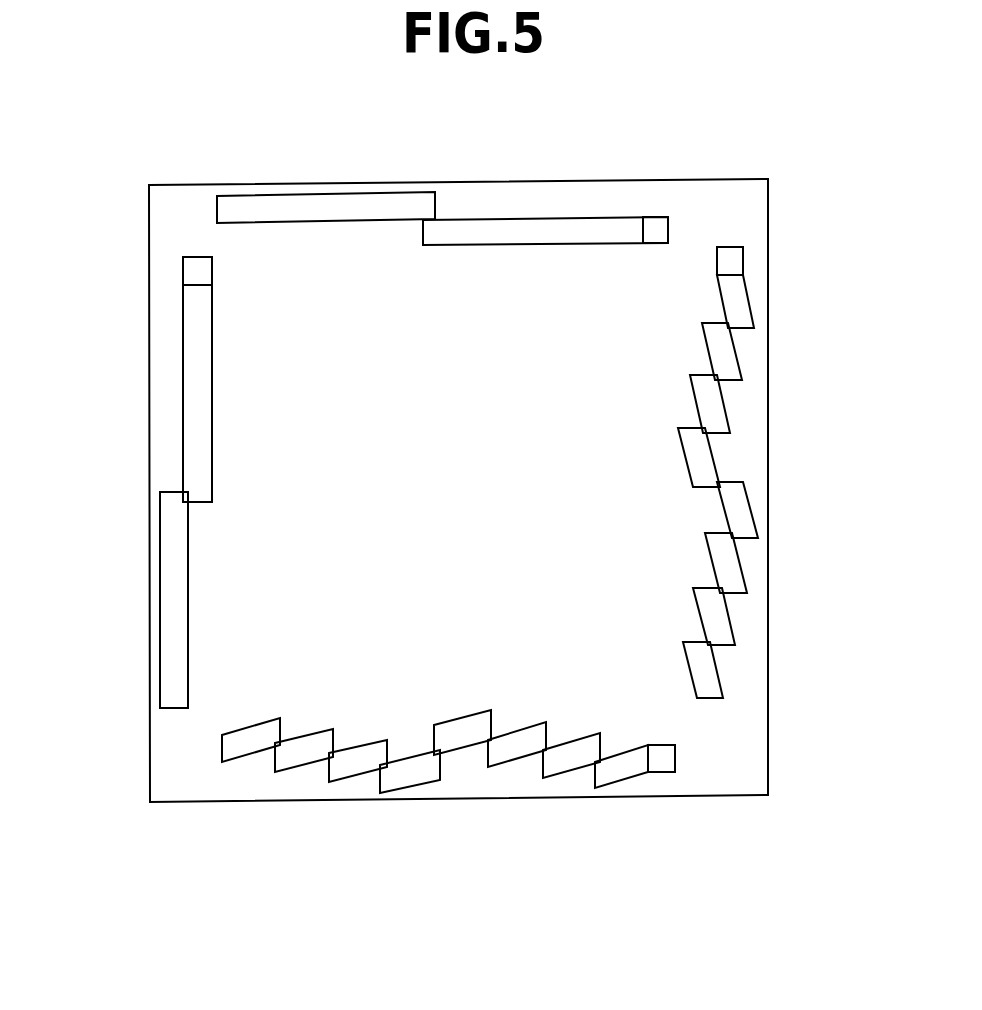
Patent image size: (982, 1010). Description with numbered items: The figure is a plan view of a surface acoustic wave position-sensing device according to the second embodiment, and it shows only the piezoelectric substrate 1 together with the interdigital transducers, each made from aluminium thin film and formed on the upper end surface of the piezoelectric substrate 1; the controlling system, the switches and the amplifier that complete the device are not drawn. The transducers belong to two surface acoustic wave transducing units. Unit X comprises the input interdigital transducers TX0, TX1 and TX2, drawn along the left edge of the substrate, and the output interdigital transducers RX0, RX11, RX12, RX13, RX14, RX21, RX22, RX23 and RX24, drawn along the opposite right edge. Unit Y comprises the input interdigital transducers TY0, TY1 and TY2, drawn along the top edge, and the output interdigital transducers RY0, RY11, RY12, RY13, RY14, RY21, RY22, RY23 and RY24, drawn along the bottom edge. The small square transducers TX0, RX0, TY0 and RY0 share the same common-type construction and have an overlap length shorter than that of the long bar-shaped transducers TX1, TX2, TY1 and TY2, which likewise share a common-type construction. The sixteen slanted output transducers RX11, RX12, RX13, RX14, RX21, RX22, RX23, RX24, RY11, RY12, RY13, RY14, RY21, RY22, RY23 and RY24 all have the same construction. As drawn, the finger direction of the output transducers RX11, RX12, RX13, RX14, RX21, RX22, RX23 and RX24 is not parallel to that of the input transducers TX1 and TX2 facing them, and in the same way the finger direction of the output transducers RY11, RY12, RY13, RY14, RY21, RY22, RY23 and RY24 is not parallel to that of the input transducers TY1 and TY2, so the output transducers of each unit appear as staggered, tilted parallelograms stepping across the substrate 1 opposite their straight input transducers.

The piezoelectric substrate 1 is at (738, 742).
The input interdigital transducer TY2 is at (292, 207).
The input interdigital transducer TY1 is at (522, 217).
The input interdigital transducer TY0 is at (657, 217).
The input interdigital transducer TX0 is at (195, 273).
The input interdigital transducer TX1 is at (195, 403).
The input interdigital transducer TX2 is at (172, 622).
The output interdigital transducer RX0 is at (732, 263).
The output interdigital transducer RX11 is at (737, 308).
The output interdigital transducer RX12 is at (727, 358).
The output interdigital transducer RX13 is at (713, 413).
The output interdigital transducer RX14 is at (703, 460).
The output interdigital transducer RX21 is at (742, 512).
The output interdigital transducer RX22 is at (732, 570).
The output interdigital transducer RX23 is at (718, 625).
The output interdigital transducer RX24 is at (708, 677).
The output interdigital transducer RY24 is at (238, 750).
The output interdigital transducer RY23 is at (295, 760).
The output interdigital transducer RY22 is at (343, 770).
The output interdigital transducer RY21 is at (407, 780).
The output interdigital transducer RY14 is at (455, 742).
The output interdigital transducer RY13 is at (507, 752).
The output interdigital transducer RY12 is at (563, 762).
The output interdigital transducer RY11 is at (622, 772).
The output interdigital transducer RY0 is at (667, 762).